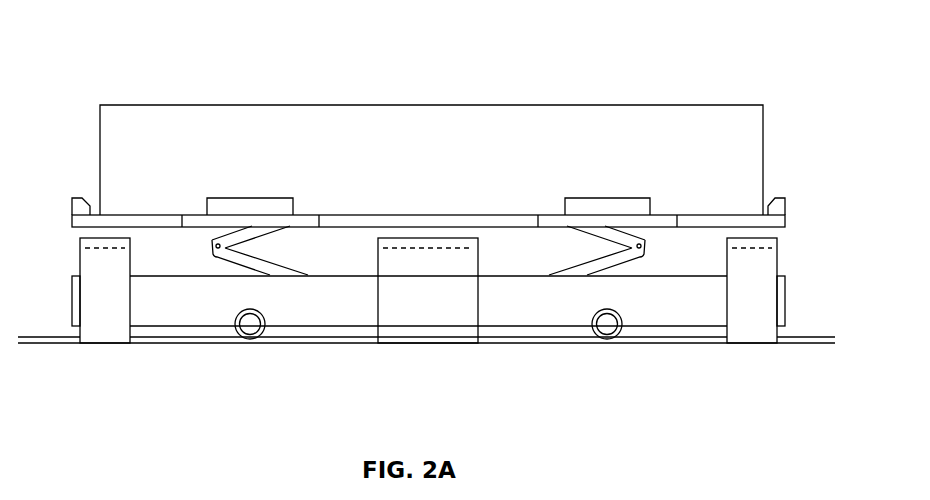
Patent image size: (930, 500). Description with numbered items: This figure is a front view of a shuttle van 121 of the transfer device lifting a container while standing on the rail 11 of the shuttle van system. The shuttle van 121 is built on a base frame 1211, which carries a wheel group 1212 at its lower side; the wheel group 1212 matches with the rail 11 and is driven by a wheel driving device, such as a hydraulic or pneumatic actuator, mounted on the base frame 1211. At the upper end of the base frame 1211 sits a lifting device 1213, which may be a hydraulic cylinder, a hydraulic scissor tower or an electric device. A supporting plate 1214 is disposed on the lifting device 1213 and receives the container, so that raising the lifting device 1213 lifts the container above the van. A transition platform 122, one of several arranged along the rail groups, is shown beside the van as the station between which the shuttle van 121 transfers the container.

The rail 11 is at (671, 330).
The shuttle van 121 is at (295, 187).
The base frame 1211 is at (193, 295).
The wheel group 1212 is at (228, 322).
The lifting device 1213 is at (217, 240).
The supporting plate 1214 is at (681, 222).
The transition platform 122 is at (398, 292).